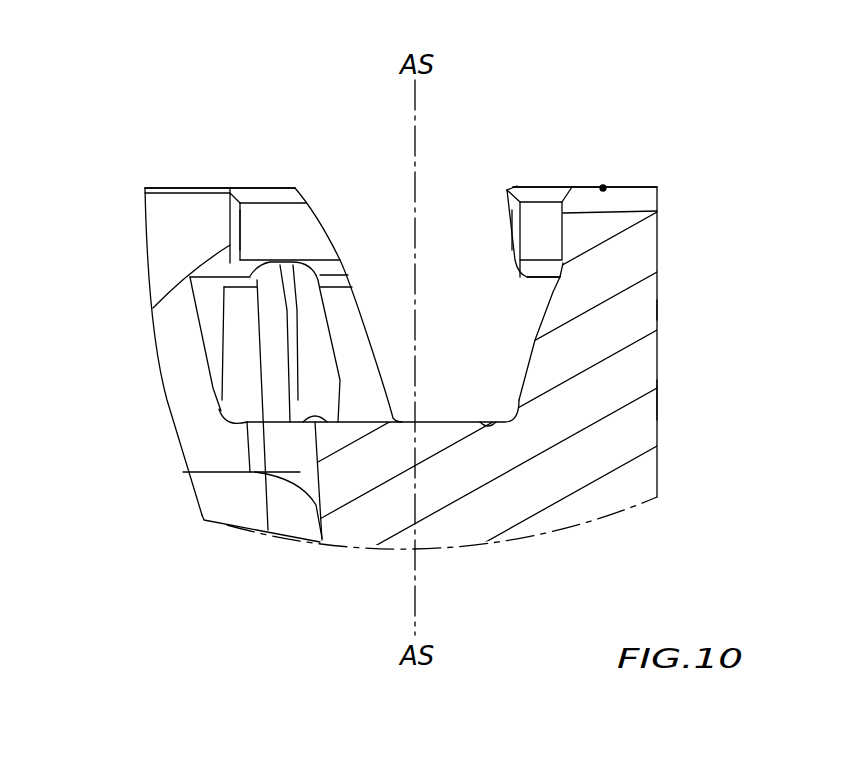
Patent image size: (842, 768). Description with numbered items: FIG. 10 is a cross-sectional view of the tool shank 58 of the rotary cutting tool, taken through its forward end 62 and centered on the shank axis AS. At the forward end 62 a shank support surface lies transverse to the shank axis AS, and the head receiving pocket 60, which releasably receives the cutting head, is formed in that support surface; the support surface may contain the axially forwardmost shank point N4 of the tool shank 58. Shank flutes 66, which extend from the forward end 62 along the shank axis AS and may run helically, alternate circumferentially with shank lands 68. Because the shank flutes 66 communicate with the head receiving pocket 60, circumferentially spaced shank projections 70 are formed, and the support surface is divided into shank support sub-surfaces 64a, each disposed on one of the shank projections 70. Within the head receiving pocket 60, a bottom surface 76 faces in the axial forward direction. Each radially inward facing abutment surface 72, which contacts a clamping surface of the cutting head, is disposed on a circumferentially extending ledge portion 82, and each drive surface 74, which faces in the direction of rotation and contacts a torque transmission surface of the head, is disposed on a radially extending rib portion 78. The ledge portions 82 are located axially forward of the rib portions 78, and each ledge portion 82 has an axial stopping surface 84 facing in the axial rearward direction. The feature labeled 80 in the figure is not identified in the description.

The tool shank 58 is at (675, 310).
The head receiving pocket 60 is at (432, 262).
The forward end 62 is at (268, 170).
The shank support sub-surface 64a is at (223, 187).
The axially forwardmost shank point N4 is at (603, 187).
The shank flute 66 is at (238, 465).
The shank land 68 is at (660, 398).
The shank projection 70 is at (148, 274).
The abutment surface 72 is at (305, 246).
The drive surface 74 is at (307, 360).
The bottom surface 76 is at (443, 403).
The rib portion 78 is at (348, 311).
The relief groove 80 is at (353, 350).
The ledge portion 82 is at (220, 221).
The axial stopping surface 84 is at (290, 262).